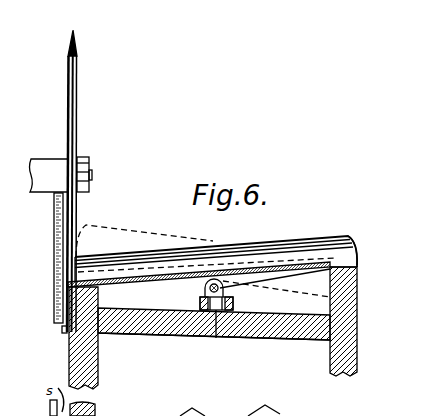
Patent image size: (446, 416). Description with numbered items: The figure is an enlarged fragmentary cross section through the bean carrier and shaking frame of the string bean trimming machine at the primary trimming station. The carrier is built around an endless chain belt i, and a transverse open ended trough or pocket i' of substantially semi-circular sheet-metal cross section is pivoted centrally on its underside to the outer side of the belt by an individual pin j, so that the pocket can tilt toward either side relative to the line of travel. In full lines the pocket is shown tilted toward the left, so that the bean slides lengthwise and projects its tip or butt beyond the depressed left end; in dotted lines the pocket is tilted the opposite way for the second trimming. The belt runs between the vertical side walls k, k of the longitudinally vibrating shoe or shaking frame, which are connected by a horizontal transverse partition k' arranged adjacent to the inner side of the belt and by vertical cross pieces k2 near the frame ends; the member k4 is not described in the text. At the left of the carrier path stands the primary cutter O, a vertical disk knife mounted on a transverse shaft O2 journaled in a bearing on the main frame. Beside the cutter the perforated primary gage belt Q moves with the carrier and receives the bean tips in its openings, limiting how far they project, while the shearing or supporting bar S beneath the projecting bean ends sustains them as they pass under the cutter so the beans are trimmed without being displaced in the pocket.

The primary cutter O is at (82, 60).
The transverse shaft O2 is at (44, 165).
The primary gage belt Q is at (54, 226).
The shearing or supporting bar S is at (64, 332).
The trough or pocket i' is at (212, 249).
The endless chain belt i is at (265, 291).
The pin j is at (216, 338).
The cross bar k4 is at (102, 310).
The horizontal transverse partition k' is at (214, 353).
The side wall k is at (213, 332).
The vertical cross piece k2 is at (358, 268).